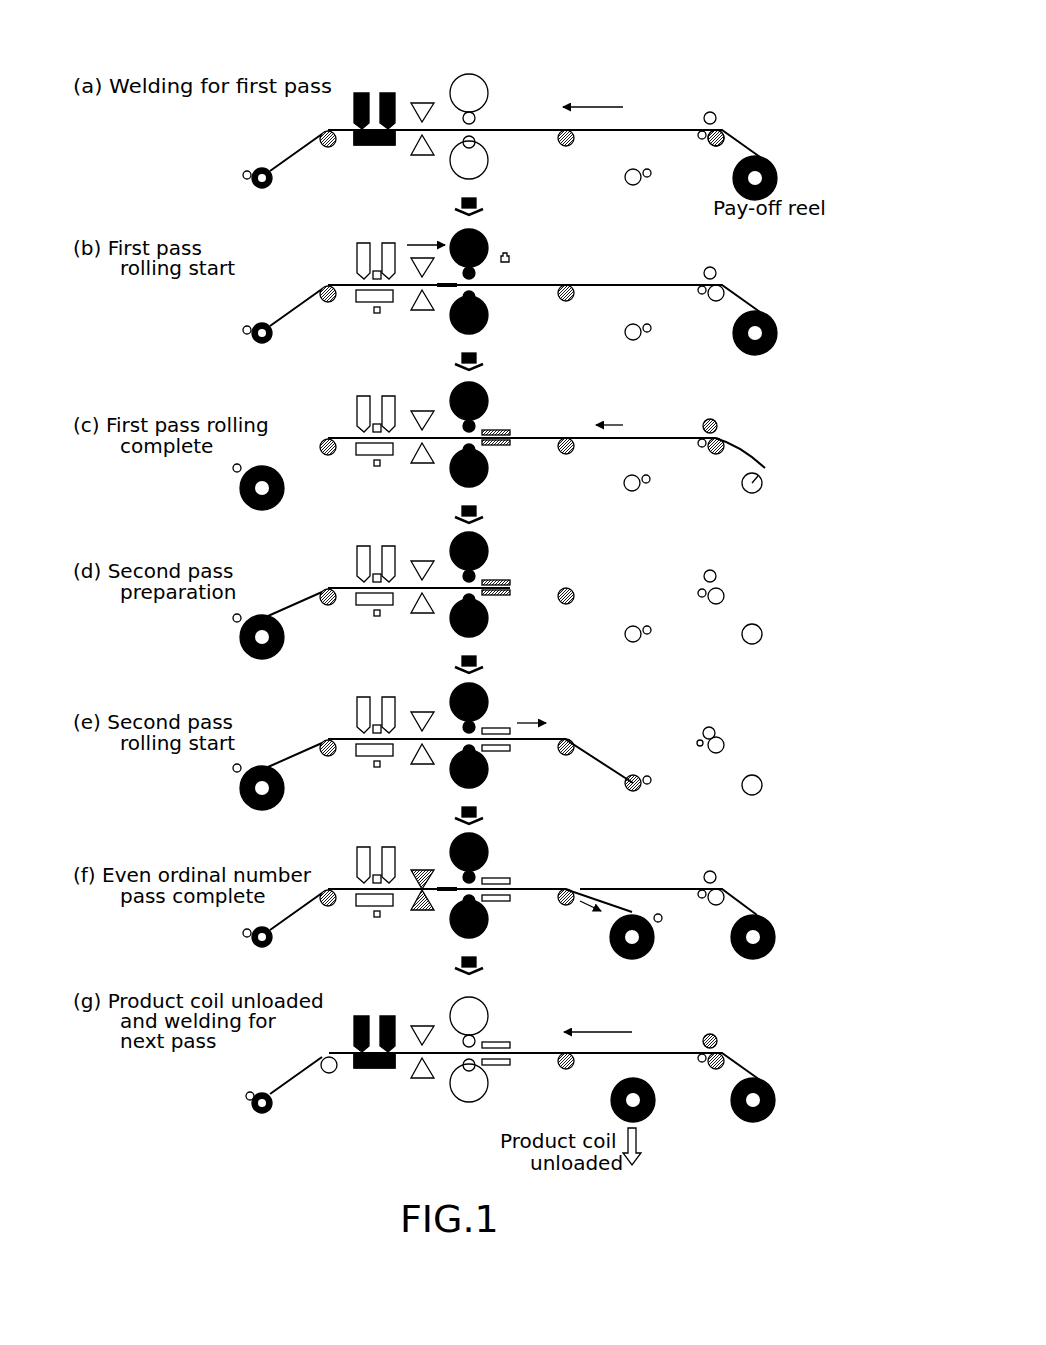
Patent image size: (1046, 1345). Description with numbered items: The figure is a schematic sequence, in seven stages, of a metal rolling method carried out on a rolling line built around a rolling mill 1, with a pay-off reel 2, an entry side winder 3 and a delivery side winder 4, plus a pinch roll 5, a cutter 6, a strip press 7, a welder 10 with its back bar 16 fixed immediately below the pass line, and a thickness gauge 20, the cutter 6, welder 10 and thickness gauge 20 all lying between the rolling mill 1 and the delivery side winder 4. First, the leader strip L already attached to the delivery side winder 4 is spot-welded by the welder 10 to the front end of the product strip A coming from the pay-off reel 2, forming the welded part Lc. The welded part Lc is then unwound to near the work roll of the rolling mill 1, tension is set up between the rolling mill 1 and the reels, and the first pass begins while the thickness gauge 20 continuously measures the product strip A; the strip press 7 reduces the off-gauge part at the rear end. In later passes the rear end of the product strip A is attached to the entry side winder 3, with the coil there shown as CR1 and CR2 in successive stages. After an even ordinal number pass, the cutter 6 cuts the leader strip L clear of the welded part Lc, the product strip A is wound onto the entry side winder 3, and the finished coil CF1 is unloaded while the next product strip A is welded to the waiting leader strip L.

The rolling mill 1 is at (432, 1126).
The pay-off reel 2 is at (776, 178).
The entry side winder 3 is at (627, 178).
The delivery side winder 4 is at (250, 182).
The pinch roll 5 is at (721, 128).
The cutter 6 is at (423, 99).
The strip press 7 is at (495, 427).
The welder 10 is at (372, 1015).
The back bar 16 is at (375, 147).
The thickness gauge 20 is at (377, 316).
The leader strip L is at (268, 160).
The welded part Lc is at (447, 288).
The product strip A is at (652, 128).
The coil CR1 is at (691, 146).
The coil CR2 is at (760, 957).
The coil CF1 is at (652, 1118).